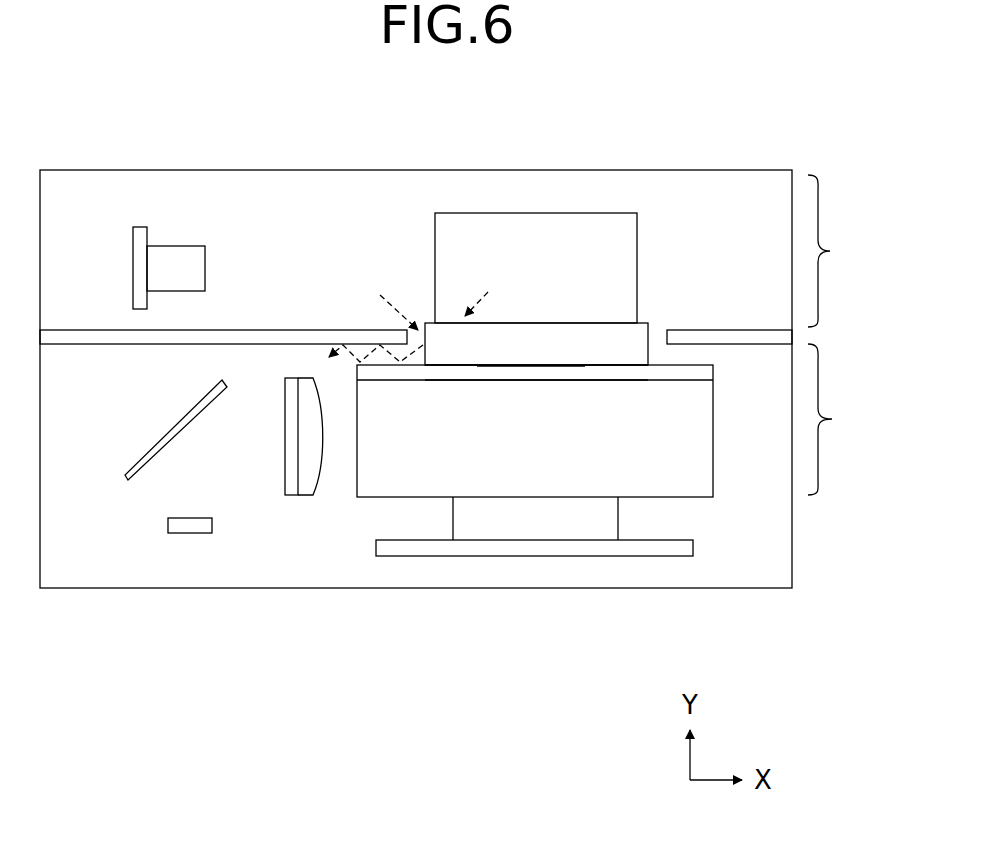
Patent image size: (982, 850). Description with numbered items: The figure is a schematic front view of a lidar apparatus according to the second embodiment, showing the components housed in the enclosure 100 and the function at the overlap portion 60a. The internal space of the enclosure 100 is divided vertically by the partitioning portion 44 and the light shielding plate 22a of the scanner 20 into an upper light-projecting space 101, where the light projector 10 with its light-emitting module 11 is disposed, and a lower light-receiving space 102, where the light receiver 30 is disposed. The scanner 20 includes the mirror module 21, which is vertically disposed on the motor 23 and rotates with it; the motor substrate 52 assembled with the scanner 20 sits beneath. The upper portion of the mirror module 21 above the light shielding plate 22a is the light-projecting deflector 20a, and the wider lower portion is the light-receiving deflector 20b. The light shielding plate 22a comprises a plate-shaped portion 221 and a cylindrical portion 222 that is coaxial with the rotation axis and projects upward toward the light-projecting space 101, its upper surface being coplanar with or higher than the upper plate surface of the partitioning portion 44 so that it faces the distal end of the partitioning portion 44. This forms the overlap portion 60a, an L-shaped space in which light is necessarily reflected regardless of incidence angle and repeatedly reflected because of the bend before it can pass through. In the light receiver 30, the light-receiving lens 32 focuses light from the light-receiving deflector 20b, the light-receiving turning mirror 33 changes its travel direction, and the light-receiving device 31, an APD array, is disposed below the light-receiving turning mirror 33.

The enclosure 100 is at (733, 169).
The light-projecting space 101 is at (850, 251).
The light-receiving space 102 is at (847, 419).
The light projector 10 is at (225, 196).
The light-emitting module 11 is at (172, 252).
The scanner 20 is at (567, 323).
The light-projecting deflector 20a is at (518, 253).
The light-receiving deflector 20b is at (690, 472).
The mirror module 21 is at (447, 227).
The light shielding plate 22a is at (477, 438).
The plate-shaped portion 221 is at (507, 372).
The cylindrical portion 222 is at (562, 343).
The motor 23 is at (603, 520).
The light receiver 30 is at (201, 526).
The light-receiving device 31 is at (190, 535).
The light-receiving lens 32 is at (295, 497).
The light-receiving turning mirror 33 is at (170, 432).
The partitioning portion 44 is at (86, 330).
The motor substrate 52 is at (685, 548).
The overlap portion 60a is at (690, 303).